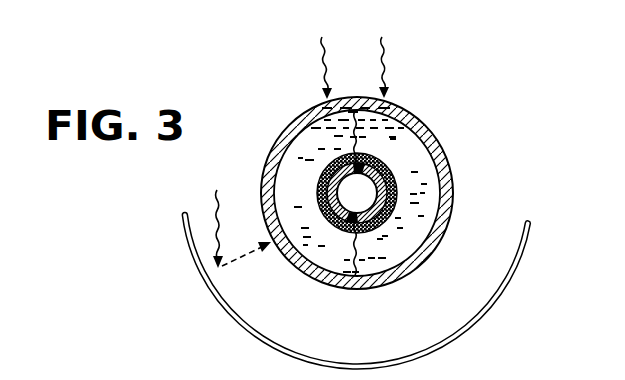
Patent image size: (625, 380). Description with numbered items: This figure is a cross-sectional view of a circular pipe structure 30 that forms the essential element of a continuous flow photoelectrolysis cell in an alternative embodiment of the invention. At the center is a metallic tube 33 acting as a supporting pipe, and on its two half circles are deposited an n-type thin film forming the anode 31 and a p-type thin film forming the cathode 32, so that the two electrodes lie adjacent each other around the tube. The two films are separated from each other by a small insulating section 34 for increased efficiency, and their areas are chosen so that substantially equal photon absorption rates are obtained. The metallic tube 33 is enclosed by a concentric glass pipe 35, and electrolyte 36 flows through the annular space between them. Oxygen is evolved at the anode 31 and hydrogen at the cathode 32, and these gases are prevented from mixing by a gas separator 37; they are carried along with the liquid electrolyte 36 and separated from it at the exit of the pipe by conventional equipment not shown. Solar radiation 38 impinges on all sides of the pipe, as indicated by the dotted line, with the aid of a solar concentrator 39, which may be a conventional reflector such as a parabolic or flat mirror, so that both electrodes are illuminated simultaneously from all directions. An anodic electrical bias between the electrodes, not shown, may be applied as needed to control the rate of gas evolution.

The circular pipe structure 30 is at (449, 135).
The anode 31 is at (317, 187).
The cathode 32 is at (396, 187).
The metallic tube 33 is at (381, 197).
The insulating section 34 is at (356, 168).
The glass pipe 35 is at (429, 251).
The electrolyte 36 is at (395, 142).
The gas separator 37 is at (352, 228).
The solar radiation 38 is at (322, 68).
The solar concentrator 39 is at (477, 305).